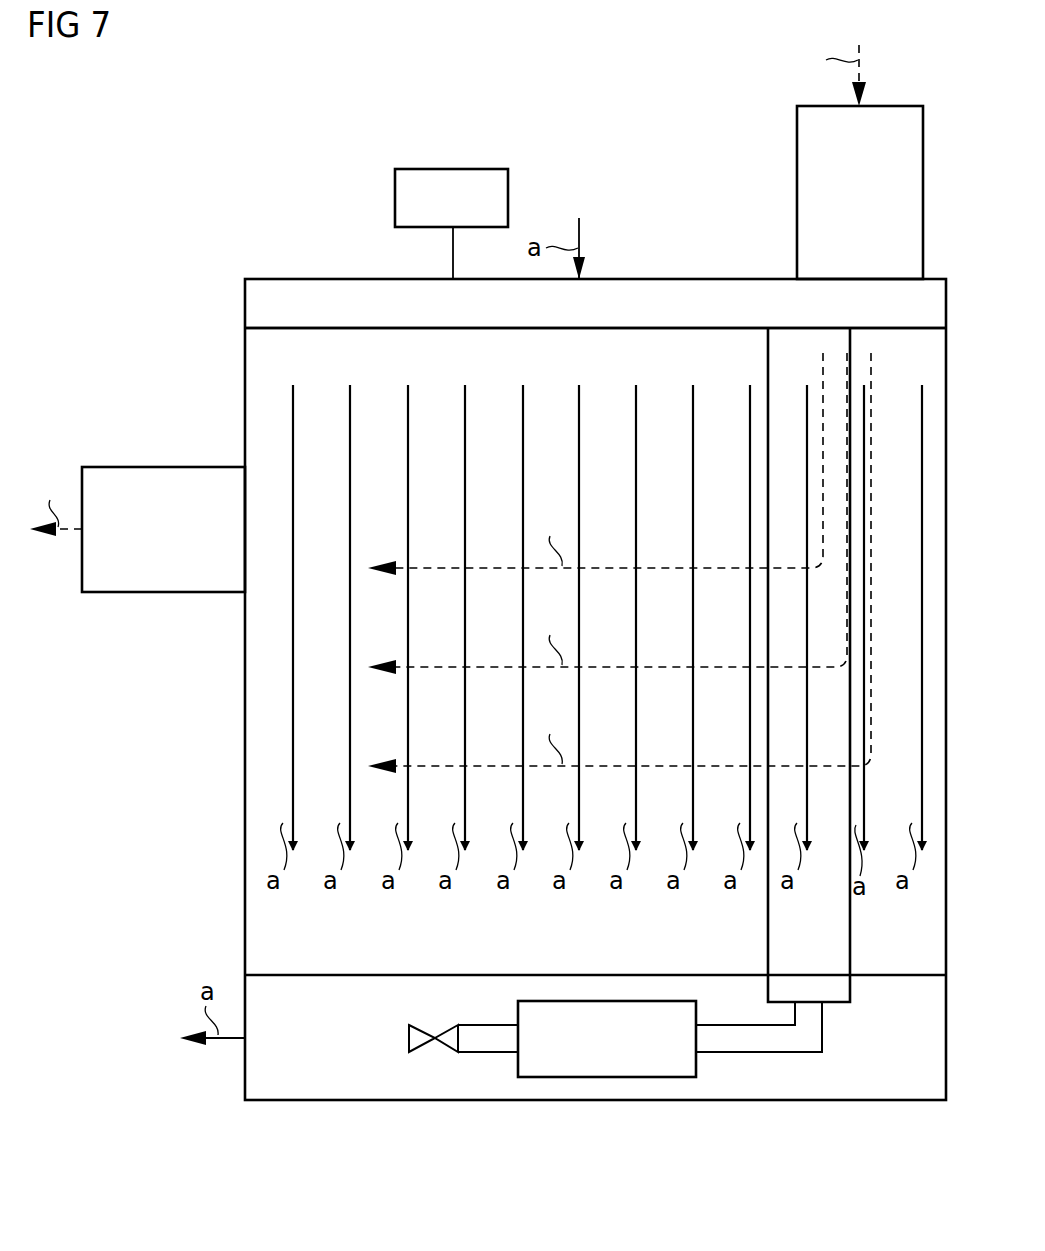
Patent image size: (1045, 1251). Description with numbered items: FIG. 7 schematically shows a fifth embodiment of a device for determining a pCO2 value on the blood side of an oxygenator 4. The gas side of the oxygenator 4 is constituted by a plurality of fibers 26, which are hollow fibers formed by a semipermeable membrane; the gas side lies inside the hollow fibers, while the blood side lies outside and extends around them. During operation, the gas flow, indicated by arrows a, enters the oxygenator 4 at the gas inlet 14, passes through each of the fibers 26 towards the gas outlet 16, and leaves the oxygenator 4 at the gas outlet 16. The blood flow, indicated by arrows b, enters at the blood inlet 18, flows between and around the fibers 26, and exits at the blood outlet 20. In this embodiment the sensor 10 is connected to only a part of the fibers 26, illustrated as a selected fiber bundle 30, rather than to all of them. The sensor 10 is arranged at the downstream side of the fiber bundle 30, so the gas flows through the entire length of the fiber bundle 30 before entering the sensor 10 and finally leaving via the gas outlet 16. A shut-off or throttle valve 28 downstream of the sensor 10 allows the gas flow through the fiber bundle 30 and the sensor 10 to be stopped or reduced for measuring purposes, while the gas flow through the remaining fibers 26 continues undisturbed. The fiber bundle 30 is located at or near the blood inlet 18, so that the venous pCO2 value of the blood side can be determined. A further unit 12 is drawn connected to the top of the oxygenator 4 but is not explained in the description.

The oxygenator 4 is at (243, 389).
The sensor 10 is at (607, 1078).
The control unit 12 is at (395, 196).
The gas inlet 14 is at (636, 278).
The gas outlet 16 is at (333, 1102).
The blood inlet 18 is at (797, 195).
The blood outlet 20 is at (148, 465).
The fibers 26 is at (265, 350).
The valve 28 is at (440, 1054).
The fiber bundle 30 is at (772, 360).